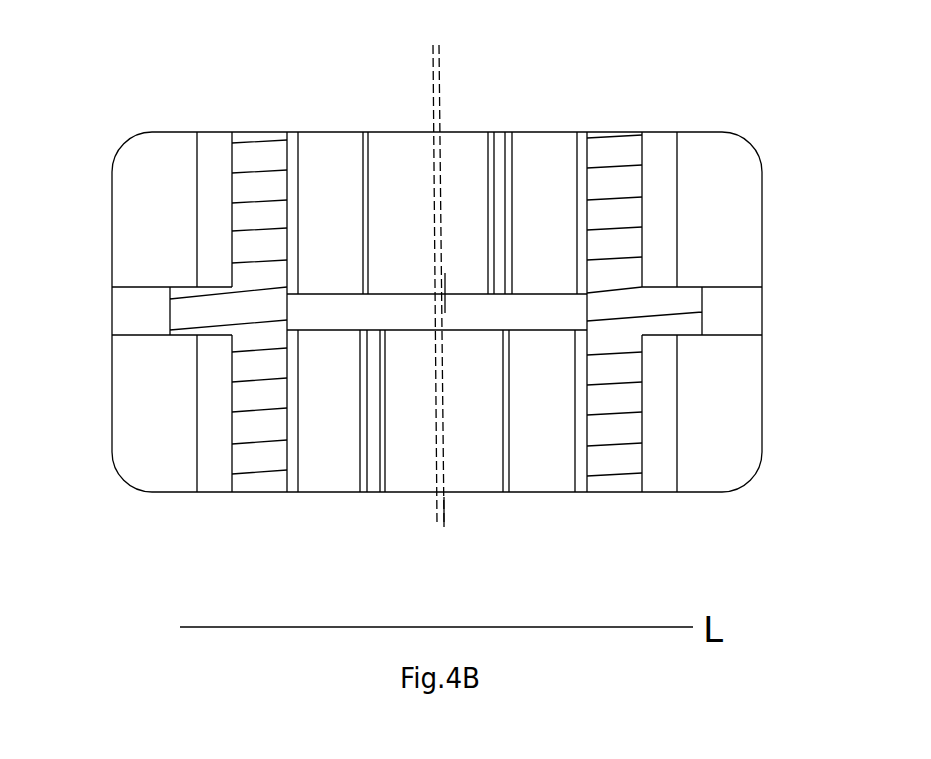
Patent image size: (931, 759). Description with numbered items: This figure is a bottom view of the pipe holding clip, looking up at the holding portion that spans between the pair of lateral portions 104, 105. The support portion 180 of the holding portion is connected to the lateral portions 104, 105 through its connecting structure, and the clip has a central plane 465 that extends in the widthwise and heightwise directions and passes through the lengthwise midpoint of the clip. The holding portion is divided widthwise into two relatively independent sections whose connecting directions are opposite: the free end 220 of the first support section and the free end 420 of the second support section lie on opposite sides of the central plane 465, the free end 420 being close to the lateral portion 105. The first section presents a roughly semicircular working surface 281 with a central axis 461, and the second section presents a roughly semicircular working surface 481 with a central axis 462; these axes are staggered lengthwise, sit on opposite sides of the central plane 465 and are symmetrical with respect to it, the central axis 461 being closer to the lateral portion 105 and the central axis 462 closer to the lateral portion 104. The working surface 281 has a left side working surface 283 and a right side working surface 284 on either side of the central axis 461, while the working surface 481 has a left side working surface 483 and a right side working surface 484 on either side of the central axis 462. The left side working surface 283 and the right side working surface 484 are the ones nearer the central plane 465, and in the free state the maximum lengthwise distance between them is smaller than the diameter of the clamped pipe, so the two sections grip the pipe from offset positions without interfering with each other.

The lateral portion 104 is at (250, 157).
The lateral portion 105 is at (635, 202).
The support portion 180 is at (446, 136).
The free end 220 is at (372, 442).
The working surface 281 is at (403, 430).
The left side working surface 283 is at (418, 475).
The right side working surface 284 is at (482, 470).
The free end 420 is at (498, 212).
The central axis 461 is at (444, 515).
The central axis 462 is at (433, 111).
The central plane 465 is at (437, 47).
The working surface 481 is at (468, 158).
The left side working surface 483 is at (393, 207).
The right side working surface 484 is at (475, 180).